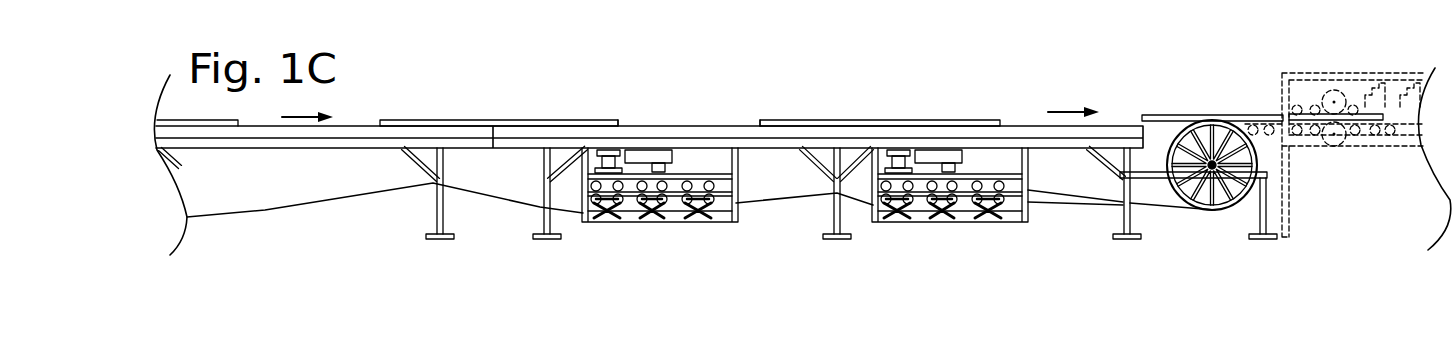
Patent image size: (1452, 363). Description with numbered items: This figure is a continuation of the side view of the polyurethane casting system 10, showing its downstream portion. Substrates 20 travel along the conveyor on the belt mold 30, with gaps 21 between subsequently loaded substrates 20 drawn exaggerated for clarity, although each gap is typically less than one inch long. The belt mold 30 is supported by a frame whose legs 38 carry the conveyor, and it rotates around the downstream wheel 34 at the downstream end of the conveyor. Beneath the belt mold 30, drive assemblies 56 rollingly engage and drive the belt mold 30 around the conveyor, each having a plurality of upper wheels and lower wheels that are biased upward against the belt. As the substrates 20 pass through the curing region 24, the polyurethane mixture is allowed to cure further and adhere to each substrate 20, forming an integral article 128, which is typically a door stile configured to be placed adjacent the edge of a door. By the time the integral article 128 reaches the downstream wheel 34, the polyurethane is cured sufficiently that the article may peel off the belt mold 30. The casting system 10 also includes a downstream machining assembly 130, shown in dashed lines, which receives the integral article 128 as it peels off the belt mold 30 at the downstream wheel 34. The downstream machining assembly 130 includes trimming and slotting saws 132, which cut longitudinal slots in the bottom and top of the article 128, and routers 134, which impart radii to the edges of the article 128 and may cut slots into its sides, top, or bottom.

The polyurethane casting system 10 is at (1077, 54).
The substrate 20 is at (622, 122).
The gap 21 is at (370, 106).
The curing region 24 is at (703, 79).
The belt mold 30 is at (285, 211).
The downstream wheel 34 is at (1217, 213).
The legs 38 is at (538, 222).
The drive assembly 56 is at (643, 228).
The integral article 128 is at (543, 116).
The downstream machining assembly 130 is at (1326, 39).
The trimming and slotting saws 132 is at (1342, 78).
The routers 134 is at (1384, 76).